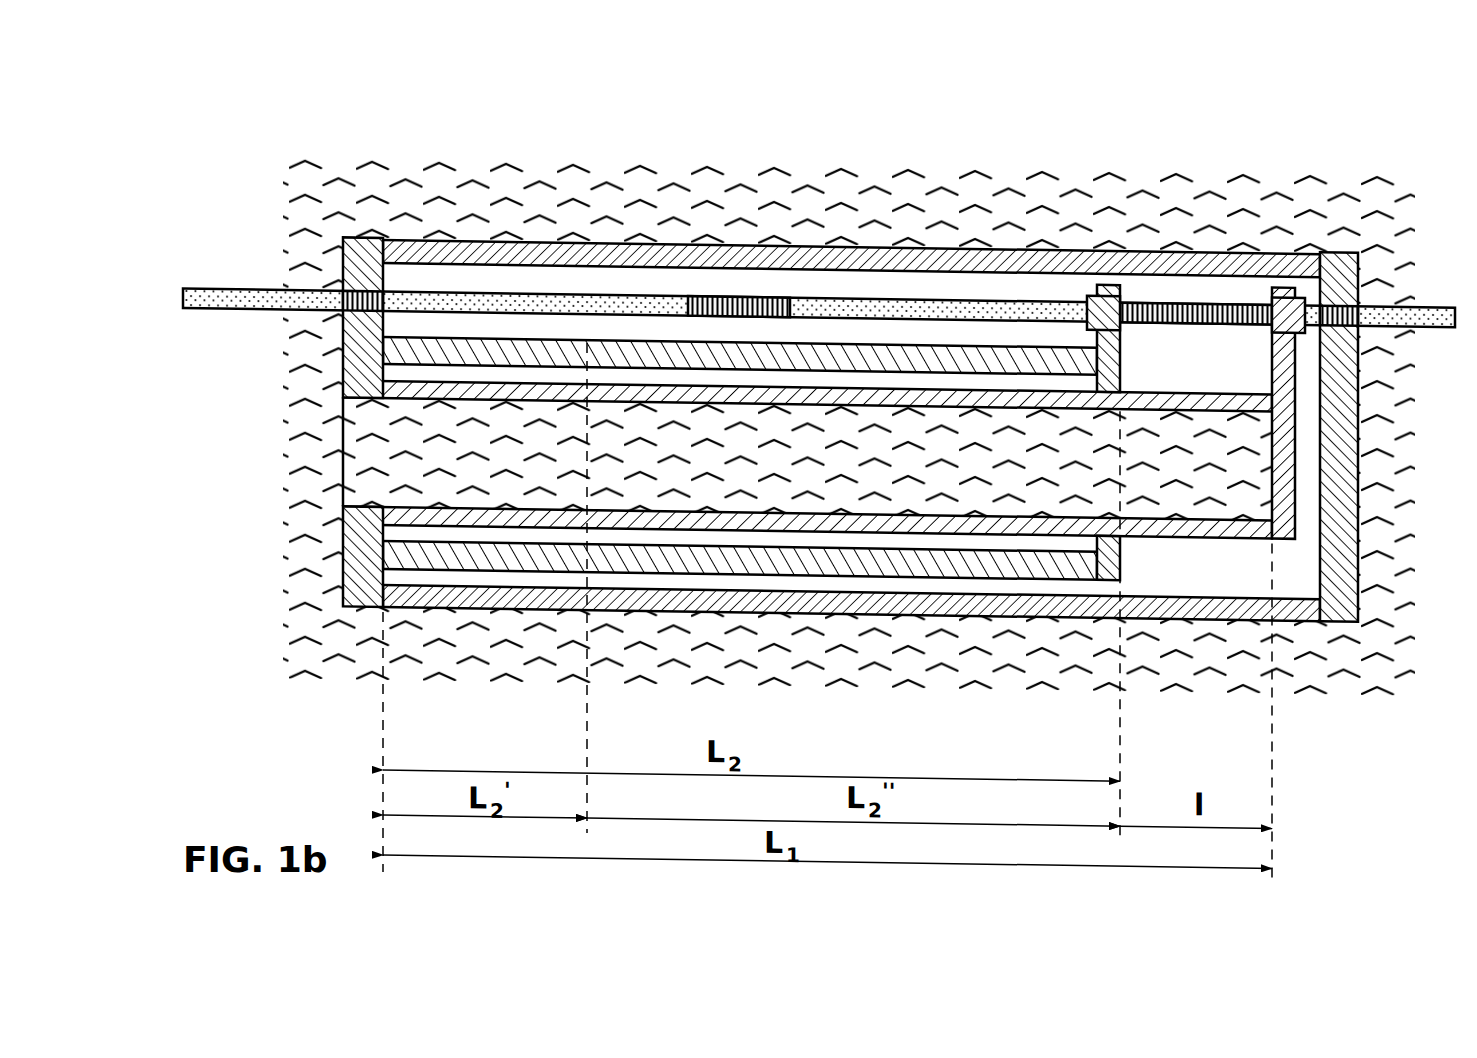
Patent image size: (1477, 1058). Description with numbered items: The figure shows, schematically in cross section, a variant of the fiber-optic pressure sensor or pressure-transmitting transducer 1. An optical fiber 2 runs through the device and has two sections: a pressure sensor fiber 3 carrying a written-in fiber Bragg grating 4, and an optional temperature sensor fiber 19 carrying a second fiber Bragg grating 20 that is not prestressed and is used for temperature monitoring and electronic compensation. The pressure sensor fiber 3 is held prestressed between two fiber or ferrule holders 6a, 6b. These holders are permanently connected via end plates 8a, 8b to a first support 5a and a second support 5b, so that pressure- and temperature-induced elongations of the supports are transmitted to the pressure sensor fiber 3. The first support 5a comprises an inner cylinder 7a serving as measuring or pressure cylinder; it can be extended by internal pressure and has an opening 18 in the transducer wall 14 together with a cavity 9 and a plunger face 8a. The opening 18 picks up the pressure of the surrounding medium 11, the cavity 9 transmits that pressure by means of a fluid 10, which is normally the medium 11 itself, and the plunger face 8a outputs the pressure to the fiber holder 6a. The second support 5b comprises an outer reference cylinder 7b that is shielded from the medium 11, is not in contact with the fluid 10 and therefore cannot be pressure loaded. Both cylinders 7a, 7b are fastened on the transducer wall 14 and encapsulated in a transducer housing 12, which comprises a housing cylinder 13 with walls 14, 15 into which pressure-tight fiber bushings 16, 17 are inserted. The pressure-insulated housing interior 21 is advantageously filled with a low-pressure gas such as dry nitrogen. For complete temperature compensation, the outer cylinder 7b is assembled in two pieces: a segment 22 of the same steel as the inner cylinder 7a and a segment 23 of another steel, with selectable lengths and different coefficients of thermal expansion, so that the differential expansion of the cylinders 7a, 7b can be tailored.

The sensor 1 is at (248, 102).
The optical fiber 2 is at (270, 301).
The pressure sensor fiber 3 is at (1255, 293).
The fiber Bragg grating 4 is at (1195, 293).
The first support 5a is at (1033, 335).
The second support 5b is at (1073, 291).
The fiber holder 6a is at (1285, 278).
The fiber holder 6b is at (1110, 275).
The inner cylinder 7a is at (902, 384).
The outer cylinder 7b is at (943, 378).
The plunger face 8a is at (1288, 466).
The end plate 8b is at (1120, 339).
The cavity 9 is at (850, 463).
The fluid 10 is at (825, 476).
The medium 11 is at (733, 182).
The transducer housing 12 is at (727, 235).
The housing cylinder 13 is at (687, 295).
The transducer wall 14 is at (355, 552).
The wall 15 is at (1333, 526).
The fiber bushing 16 is at (340, 284).
The fiber bushing 17 is at (1348, 275).
The opening 18 is at (350, 432).
The temperature sensor fiber 19 is at (553, 297).
The fiber Bragg grating 20 is at (553, 297).
The housing interior 21 is at (418, 276).
The segment 22 is at (443, 552).
The segment 23 is at (747, 552).